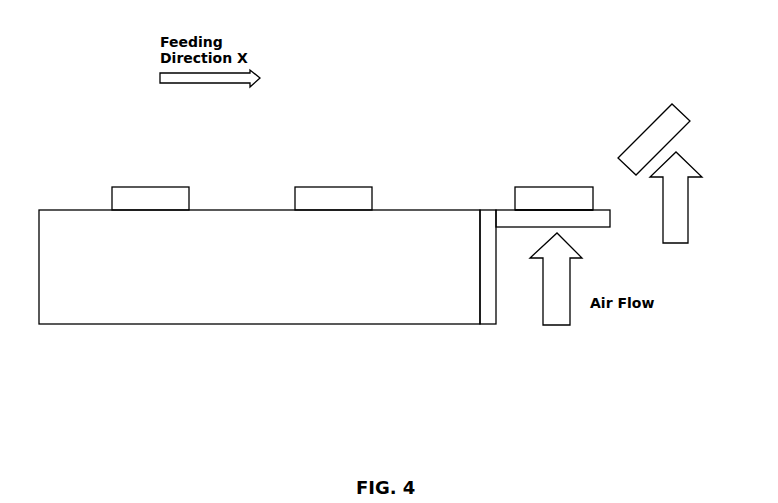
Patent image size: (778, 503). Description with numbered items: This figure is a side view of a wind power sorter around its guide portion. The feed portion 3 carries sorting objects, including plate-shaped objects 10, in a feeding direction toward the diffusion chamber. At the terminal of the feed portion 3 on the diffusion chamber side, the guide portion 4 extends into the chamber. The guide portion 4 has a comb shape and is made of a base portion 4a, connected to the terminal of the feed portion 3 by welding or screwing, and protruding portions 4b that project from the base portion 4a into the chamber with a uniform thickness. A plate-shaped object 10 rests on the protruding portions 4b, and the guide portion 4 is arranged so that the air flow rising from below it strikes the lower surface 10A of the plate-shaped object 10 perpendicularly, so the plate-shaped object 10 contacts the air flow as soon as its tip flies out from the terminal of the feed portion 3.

The feed portion 3 is at (344, 304).
The guide portion 4 is at (485, 134).
The base portion 4a is at (486, 208).
The protruding portions 4b is at (512, 208).
The plate-shaped object 10 is at (156, 200).
The lower surface 10A is at (565, 207).